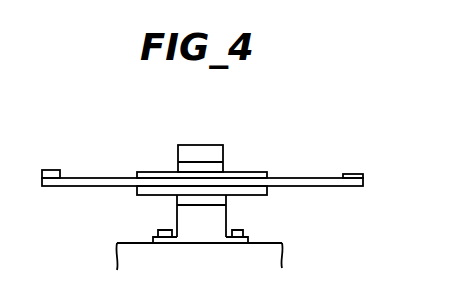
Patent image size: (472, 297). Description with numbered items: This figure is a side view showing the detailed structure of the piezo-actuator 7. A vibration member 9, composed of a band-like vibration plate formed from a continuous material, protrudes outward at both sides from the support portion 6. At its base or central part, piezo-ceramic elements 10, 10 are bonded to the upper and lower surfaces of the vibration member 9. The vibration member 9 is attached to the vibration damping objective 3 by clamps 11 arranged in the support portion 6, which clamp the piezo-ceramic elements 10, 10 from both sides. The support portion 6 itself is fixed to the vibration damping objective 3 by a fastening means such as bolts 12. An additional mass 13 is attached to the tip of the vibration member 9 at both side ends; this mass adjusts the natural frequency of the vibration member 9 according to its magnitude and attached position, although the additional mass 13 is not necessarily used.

The piezo-actuator 7 is at (160, 141).
The clamps 11 is at (228, 168).
The piezo-ceramic elements 10 is at (266, 172).
The vibration member 9 is at (305, 178).
The additional mass 13 is at (356, 174).
The support portion 6 is at (177, 214).
The bolts 12 is at (243, 232).
The vibration damping objective 3 is at (275, 262).